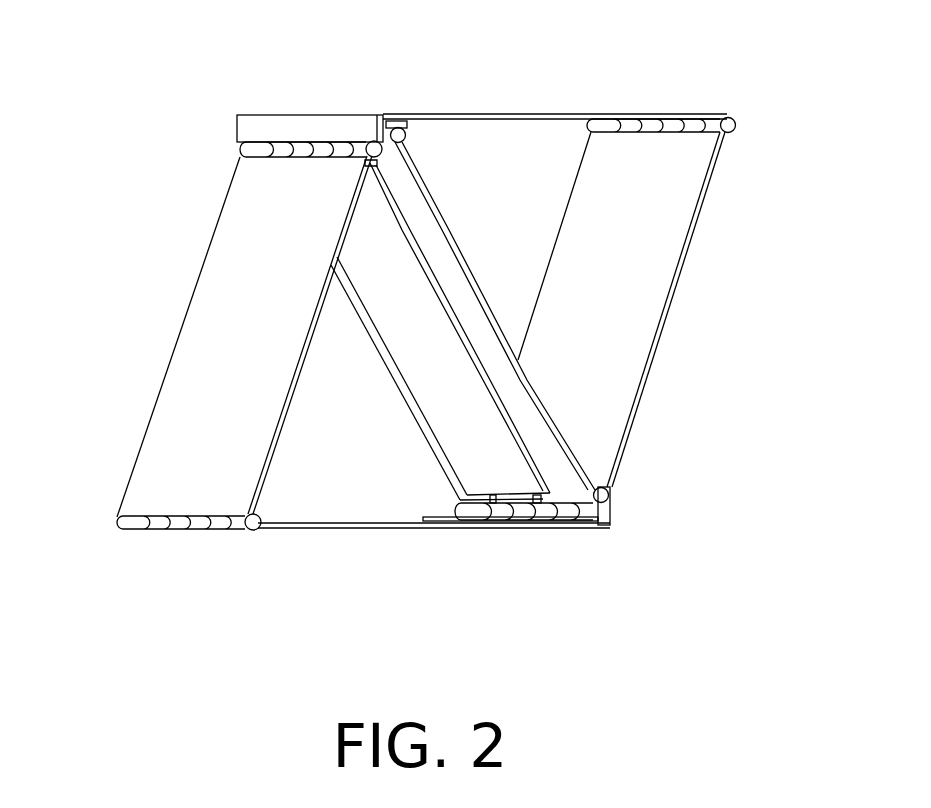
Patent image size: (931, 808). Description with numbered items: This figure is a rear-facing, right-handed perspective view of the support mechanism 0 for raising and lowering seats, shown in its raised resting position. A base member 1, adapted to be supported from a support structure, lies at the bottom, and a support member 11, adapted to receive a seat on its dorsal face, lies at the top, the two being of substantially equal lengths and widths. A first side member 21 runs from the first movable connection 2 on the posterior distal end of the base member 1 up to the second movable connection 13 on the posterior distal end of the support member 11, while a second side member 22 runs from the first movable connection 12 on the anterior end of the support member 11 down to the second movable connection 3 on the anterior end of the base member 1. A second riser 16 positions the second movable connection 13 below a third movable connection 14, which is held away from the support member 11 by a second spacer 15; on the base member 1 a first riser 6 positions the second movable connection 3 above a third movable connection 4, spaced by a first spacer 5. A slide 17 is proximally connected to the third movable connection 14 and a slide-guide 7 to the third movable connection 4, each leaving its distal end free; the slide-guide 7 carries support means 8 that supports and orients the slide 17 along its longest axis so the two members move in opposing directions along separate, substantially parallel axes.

The support mechanism 0 is at (125, 393).
The base member 1 is at (398, 532).
The first movable connection 2 is at (119, 521).
The second movable connection 3 is at (611, 493).
The third movable connection 4 is at (458, 510).
The first spacer 5 is at (427, 517).
The first riser 6 is at (613, 522).
The slide-guide 7 is at (484, 287).
The support means 8 is at (435, 331).
The support member 11 is at (490, 111).
The first movable connection 12 is at (738, 125).
The second movable connection 13 is at (240, 150).
The third movable connection 14 is at (406, 141).
The second spacer 15 is at (410, 125).
The second riser 16 is at (300, 112).
The slide 17 is at (507, 494).
The first side member 21 is at (227, 308).
The second side member 22 is at (672, 305).